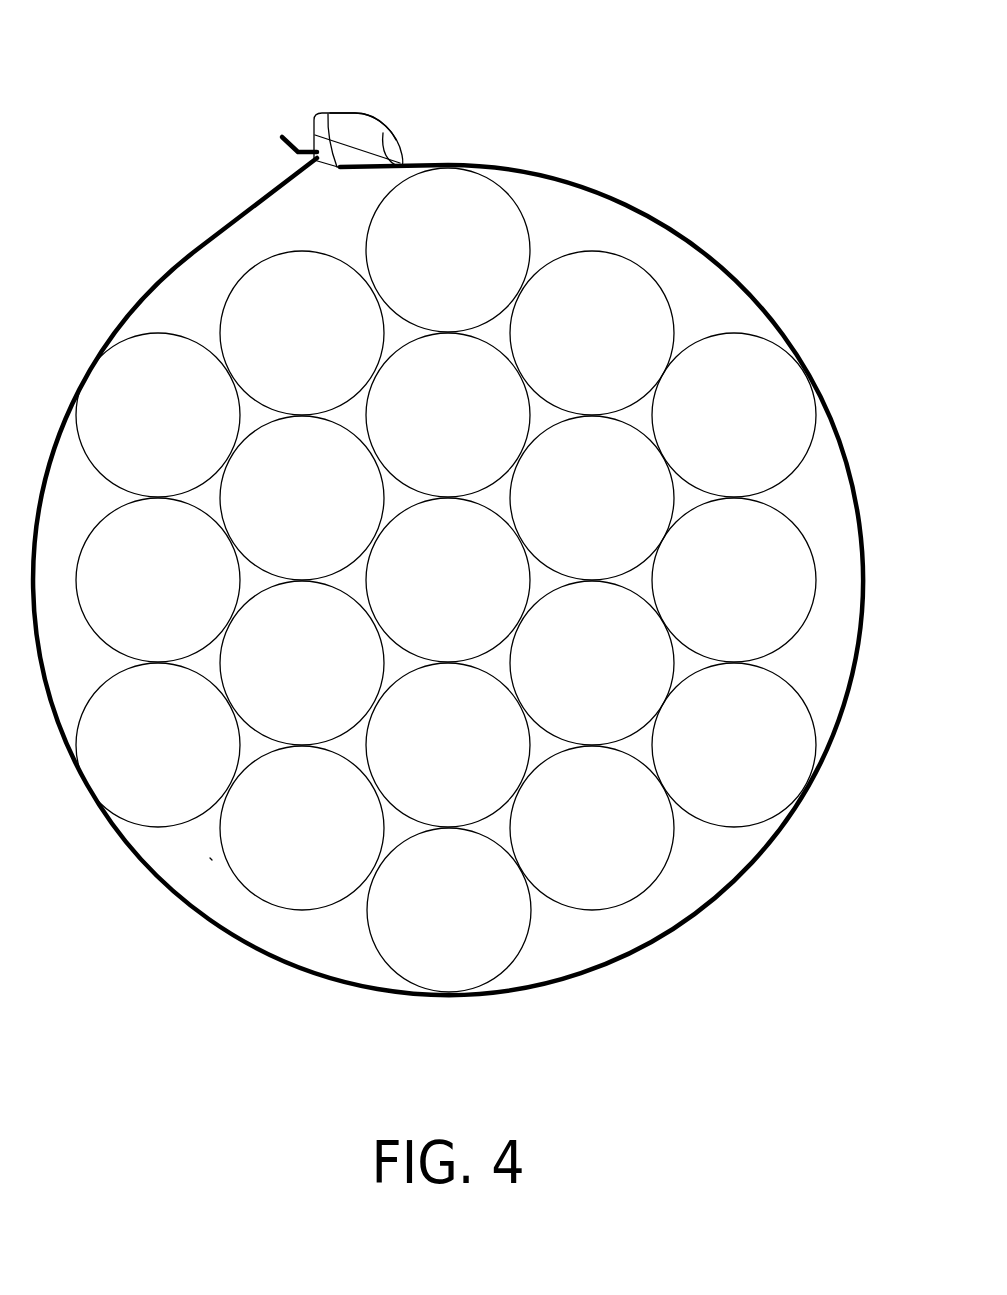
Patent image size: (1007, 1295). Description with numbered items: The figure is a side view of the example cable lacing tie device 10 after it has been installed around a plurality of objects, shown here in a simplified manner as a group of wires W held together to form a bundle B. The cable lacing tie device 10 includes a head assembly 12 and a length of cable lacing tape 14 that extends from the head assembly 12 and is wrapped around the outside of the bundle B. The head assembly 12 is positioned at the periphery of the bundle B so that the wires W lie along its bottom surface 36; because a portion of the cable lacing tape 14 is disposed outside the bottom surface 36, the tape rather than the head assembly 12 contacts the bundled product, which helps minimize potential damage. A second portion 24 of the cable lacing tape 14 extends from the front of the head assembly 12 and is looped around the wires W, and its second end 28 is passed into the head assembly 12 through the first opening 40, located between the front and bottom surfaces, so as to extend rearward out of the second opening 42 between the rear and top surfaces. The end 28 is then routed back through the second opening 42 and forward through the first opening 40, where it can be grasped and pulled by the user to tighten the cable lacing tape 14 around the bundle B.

The cable lacing tie device 10 is at (338, 90).
The head assembly 12 is at (383, 133).
The cable lacing tape 14 is at (537, 177).
The second portion 24 is at (307, 143).
The second end 28 is at (282, 137).
The bottom surface 36 is at (353, 170).
The first opening 40 is at (322, 170).
The second opening 42 is at (370, 113).
The wires W is at (453, 942).
The bundle B is at (210, 858).